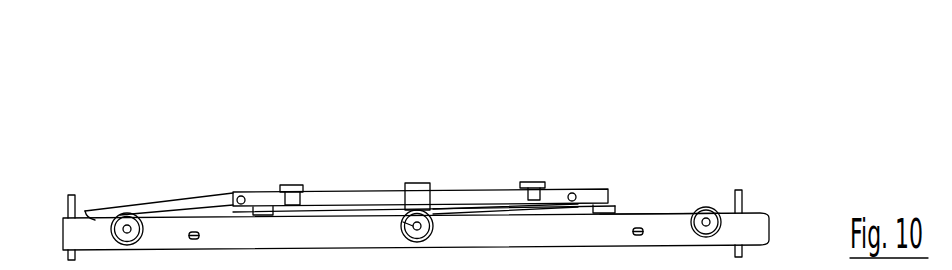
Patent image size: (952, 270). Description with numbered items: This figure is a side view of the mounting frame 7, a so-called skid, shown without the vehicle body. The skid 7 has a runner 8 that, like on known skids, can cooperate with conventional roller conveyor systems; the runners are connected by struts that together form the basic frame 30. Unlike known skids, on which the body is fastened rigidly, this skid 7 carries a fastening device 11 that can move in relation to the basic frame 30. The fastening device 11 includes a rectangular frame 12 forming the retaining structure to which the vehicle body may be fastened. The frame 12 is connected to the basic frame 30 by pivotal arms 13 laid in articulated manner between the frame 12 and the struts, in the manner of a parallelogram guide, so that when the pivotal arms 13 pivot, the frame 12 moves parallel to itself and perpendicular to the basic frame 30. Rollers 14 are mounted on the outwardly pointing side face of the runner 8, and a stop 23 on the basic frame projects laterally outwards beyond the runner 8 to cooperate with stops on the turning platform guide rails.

The mounting frame 7 is at (357, 110).
The runner 8 is at (753, 233).
The fastening device 11 is at (258, 200).
The frame 12 is at (595, 200).
The pivotal arm 13 is at (195, 203).
The roller 14 is at (112, 229).
The stop 23 is at (418, 200).
The basic frame 30 is at (666, 220).